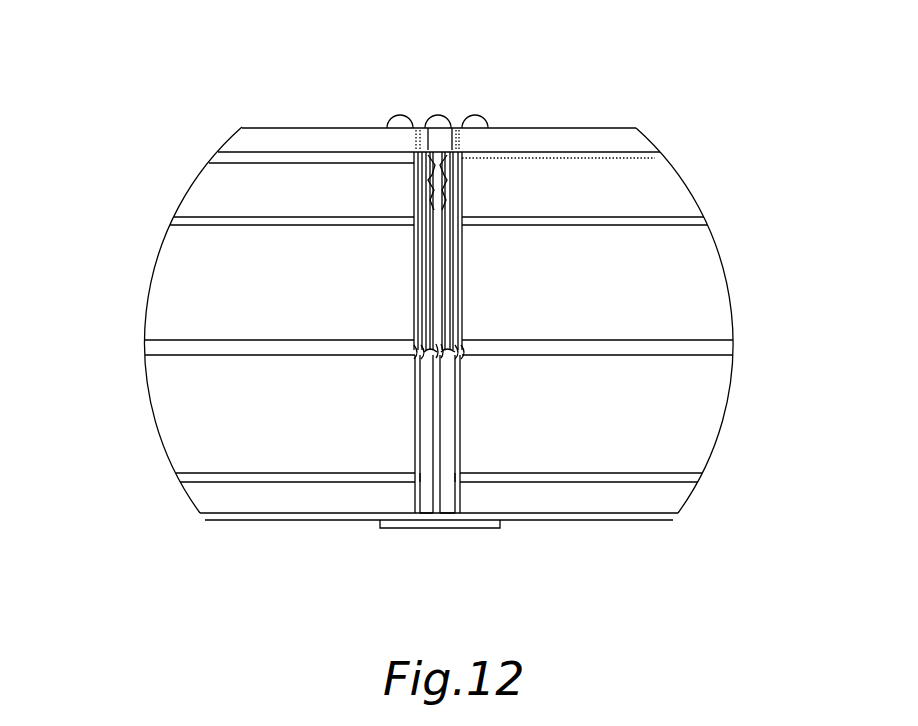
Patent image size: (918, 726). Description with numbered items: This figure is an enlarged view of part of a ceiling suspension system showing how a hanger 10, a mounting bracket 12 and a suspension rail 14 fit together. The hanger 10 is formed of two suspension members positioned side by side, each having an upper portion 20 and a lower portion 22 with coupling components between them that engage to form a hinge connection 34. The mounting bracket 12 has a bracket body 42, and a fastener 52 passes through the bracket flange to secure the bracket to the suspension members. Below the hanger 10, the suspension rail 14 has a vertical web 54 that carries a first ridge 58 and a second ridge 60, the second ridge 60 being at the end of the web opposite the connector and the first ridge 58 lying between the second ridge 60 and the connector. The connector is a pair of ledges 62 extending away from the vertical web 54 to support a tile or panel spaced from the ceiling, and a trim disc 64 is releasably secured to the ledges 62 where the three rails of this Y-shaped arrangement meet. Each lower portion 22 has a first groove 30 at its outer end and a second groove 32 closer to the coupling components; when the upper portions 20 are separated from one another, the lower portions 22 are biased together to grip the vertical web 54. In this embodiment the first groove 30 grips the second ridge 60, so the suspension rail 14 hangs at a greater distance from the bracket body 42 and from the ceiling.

The hanger 10 is at (205, 292).
The mounting bracket 12 is at (300, 126).
The suspension rail 14 is at (692, 430).
The upper portion 20 is at (736, 146).
The lower portion 22 is at (752, 228).
The first groove 30 is at (440, 356).
The second groove 32 is at (413, 238).
The hinge connection 34 is at (748, 188).
The bracket body 42 is at (595, 128).
The fastener 52 is at (472, 127).
The vertical web 54 is at (443, 415).
The first ridge 58 is at (443, 477).
The second ridge 60 is at (460, 348).
The ledges 62 is at (640, 521).
The trim disc 64 is at (485, 525).